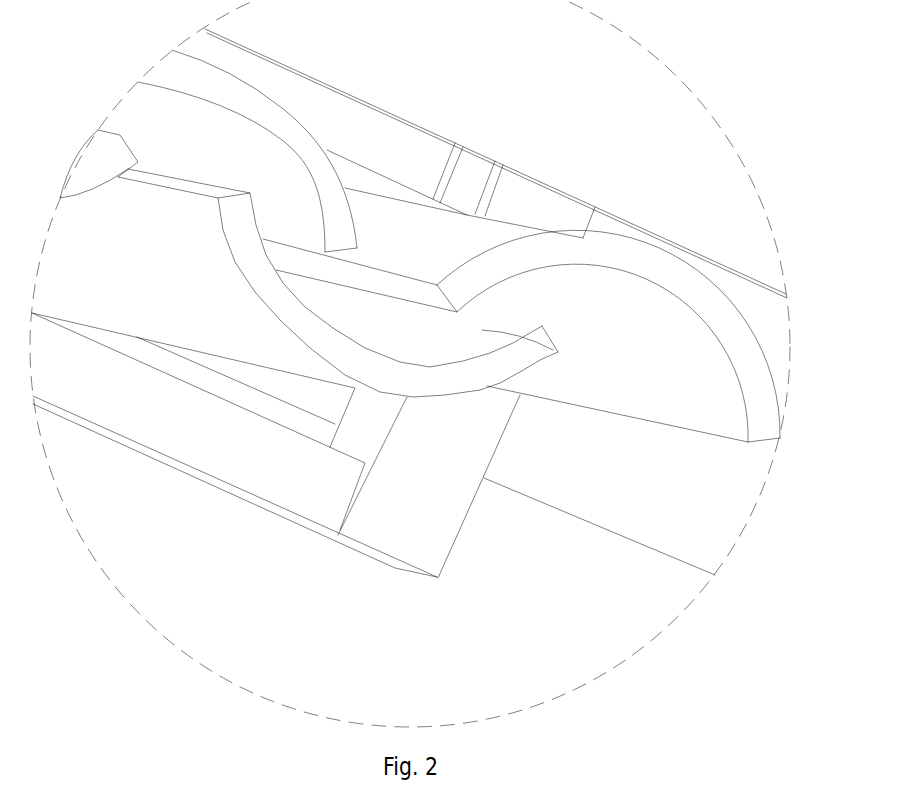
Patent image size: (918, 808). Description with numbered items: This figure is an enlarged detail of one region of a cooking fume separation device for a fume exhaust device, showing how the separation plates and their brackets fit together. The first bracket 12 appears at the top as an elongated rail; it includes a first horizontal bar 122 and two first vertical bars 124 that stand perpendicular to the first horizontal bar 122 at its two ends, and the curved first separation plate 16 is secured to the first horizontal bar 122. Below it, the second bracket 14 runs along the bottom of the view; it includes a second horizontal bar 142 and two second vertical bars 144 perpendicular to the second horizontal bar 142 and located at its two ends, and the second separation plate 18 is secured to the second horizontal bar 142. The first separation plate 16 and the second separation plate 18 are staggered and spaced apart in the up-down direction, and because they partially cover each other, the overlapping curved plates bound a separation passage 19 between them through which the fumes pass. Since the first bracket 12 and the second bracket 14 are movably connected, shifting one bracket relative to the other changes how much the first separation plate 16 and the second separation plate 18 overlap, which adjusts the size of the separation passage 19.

The first bracket 12 is at (565, 65).
The first horizontal bar 122 is at (382, 178).
The first vertical bar 124 is at (467, 185).
The second bracket 14 is at (417, 627).
The second horizontal bar 142 is at (277, 463).
The second vertical bar 144 is at (425, 522).
The first separation plate 16 is at (628, 265).
The second separation plate 18 is at (468, 380).
The separation passage 19 is at (558, 355).